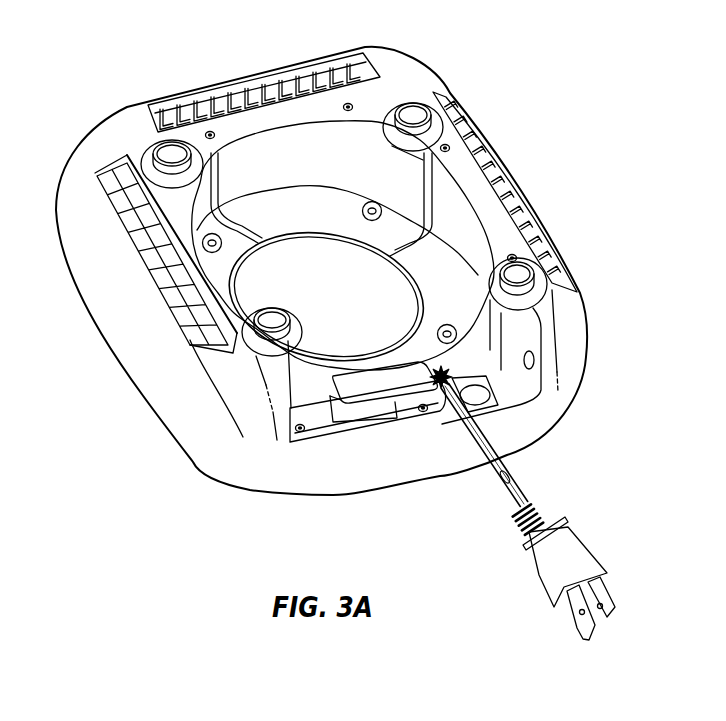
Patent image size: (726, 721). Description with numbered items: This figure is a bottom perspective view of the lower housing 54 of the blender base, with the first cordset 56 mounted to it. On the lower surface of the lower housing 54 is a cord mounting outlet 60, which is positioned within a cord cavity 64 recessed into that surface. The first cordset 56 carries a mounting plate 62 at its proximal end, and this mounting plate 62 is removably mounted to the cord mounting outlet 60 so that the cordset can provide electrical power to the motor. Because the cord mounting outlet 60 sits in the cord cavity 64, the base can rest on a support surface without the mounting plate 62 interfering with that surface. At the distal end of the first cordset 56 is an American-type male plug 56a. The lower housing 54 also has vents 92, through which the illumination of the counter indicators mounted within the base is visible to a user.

The lower housing 54 is at (99, 316).
The vents 92 is at (366, 75).
The cord mounting outlet 60 is at (381, 431).
The mounting plate 62 is at (368, 422).
The cord cavity 64 is at (513, 388).
The first cordset 56 is at (527, 477).
The American-type male plug 56a is at (578, 555).